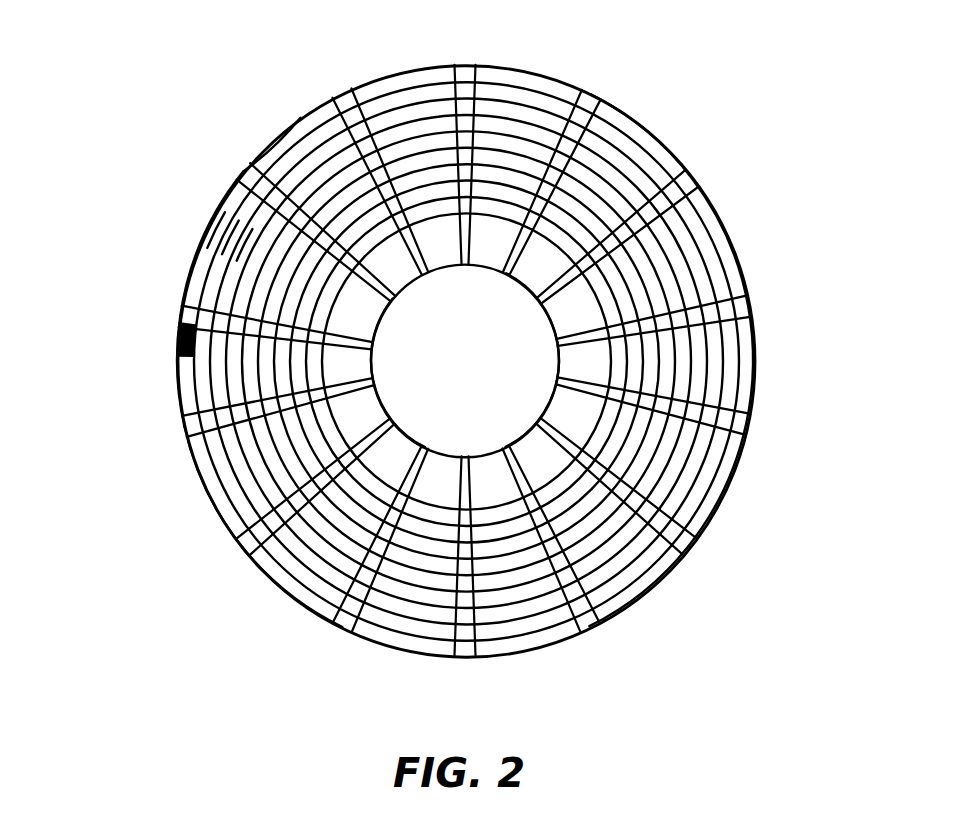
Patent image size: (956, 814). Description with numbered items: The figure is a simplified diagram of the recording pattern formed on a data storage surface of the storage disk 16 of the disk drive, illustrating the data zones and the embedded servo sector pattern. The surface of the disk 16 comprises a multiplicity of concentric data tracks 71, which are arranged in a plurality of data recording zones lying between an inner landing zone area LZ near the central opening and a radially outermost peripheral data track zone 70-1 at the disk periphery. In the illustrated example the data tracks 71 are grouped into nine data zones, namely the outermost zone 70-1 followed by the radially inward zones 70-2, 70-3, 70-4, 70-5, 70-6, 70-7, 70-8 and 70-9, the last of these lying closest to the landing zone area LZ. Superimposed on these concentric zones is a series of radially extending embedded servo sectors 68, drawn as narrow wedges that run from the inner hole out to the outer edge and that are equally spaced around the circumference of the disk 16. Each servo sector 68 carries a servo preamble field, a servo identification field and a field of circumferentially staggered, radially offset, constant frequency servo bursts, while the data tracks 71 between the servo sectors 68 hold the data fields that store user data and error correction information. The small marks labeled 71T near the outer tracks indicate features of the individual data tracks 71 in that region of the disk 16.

The storage disk 16 is at (120, 588).
The embedded servo sectors 68 is at (470, 66).
The outermost data zone 70-1 is at (640, 132).
The data zone 70-2 is at (722, 236).
The data zone 70-3 is at (718, 366).
The data zone 70-4 is at (690, 470).
The data zone 70-5 is at (650, 585).
The data zone 70-6 is at (300, 590).
The data zone 70-7 is at (245, 490).
The data zone 70-8 is at (215, 378).
The data zone 70-9 is at (248, 228).
The concentric data tracks 71 is at (178, 338).
The track identification marks 71T is at (237, 261).
The inner landing zone area LZ is at (312, 130).